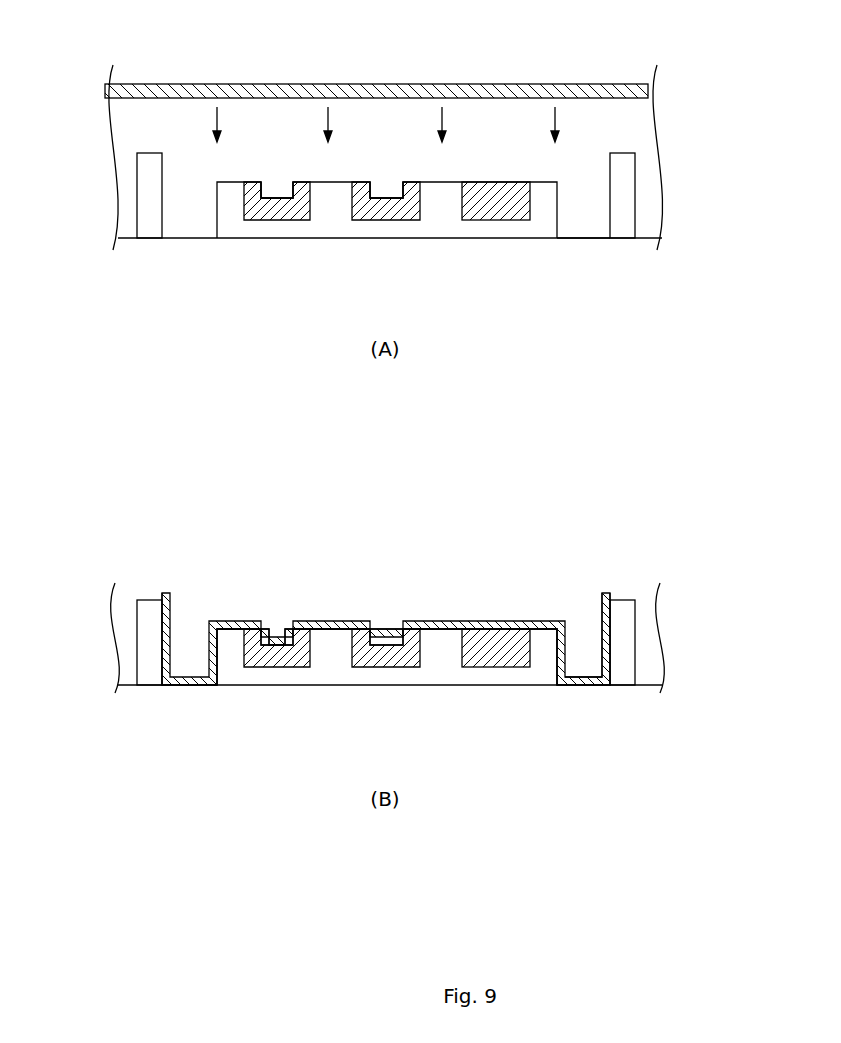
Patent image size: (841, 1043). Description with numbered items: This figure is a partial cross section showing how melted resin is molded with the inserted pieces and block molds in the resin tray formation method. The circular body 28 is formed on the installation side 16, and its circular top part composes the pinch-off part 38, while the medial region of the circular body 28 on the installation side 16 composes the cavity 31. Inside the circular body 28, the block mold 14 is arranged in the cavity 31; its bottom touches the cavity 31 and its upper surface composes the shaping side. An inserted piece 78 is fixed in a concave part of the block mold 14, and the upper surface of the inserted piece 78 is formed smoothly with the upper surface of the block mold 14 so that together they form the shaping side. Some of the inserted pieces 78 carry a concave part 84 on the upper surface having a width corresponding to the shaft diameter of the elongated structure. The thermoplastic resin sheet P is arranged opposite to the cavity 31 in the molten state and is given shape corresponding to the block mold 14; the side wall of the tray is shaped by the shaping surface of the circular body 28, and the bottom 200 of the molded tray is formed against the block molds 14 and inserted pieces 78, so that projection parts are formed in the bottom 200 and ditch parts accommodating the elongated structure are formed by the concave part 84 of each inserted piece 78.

The block mold 14 is at (234, 227).
The installation side 16 is at (580, 226).
The circular body 28 is at (150, 225).
The cavity 31 is at (183, 257).
The pinch-off part 38 is at (150, 153).
The inserted piece 78 is at (302, 222).
The concave part 84 is at (277, 190).
The protective film P is at (508, 95).
The bottom 200 is at (585, 675).